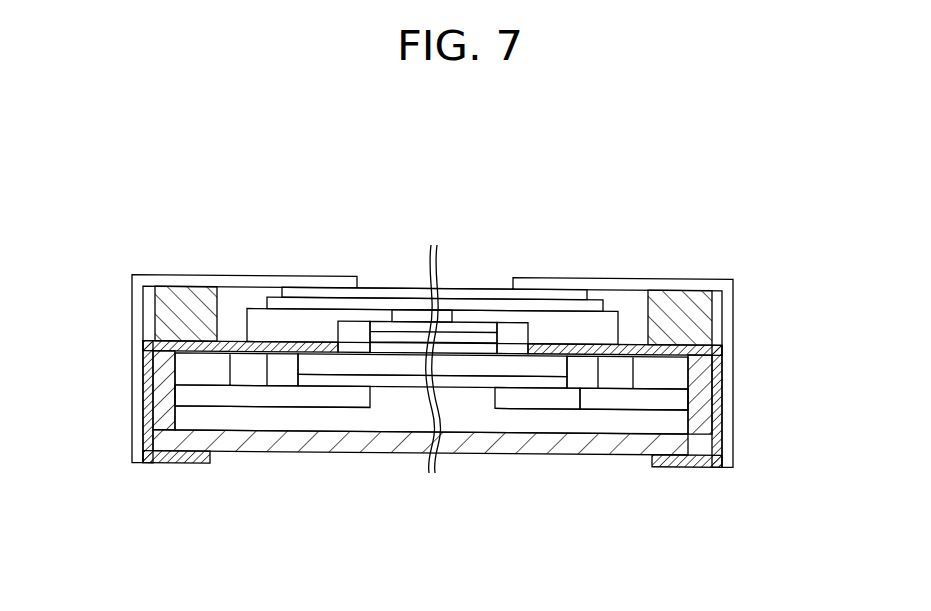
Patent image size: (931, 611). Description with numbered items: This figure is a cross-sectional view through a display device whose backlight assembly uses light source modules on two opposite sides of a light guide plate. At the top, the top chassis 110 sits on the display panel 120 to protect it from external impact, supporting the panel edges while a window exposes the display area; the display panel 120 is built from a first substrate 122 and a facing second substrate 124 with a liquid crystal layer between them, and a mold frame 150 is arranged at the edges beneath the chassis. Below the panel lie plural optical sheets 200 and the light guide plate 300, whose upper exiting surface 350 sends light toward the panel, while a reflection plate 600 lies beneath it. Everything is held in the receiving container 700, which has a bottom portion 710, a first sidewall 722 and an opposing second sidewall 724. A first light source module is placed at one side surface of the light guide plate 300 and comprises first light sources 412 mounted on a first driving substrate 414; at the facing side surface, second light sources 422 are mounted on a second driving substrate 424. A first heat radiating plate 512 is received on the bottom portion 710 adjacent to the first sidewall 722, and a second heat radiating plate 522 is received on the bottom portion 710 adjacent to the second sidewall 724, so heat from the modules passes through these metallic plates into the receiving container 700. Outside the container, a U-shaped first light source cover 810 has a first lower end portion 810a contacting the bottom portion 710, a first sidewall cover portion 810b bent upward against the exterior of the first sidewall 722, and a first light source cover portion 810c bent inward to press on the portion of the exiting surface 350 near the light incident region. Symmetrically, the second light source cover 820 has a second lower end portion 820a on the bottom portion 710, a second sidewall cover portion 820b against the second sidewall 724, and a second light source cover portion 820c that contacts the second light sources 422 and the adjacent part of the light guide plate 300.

The top chassis 110 is at (238, 277).
The display panel 120 is at (390, 216).
The first substrate 122 is at (327, 302).
The second substrate 124 is at (373, 292).
The mold frame 150 is at (193, 295).
The optical sheets 200 is at (498, 330).
The light guide plate 300 is at (447, 367).
The exiting surface 350 is at (283, 342).
The first light sources 412 is at (252, 375).
The first driving substrate 414 is at (298, 398).
The second light sources 422 is at (600, 430).
The second driving substrate 424 is at (658, 403).
The first heat radiating plate 512 is at (390, 407).
The second heat radiating plate 522 is at (477, 408).
The reflection plate 600 is at (340, 382).
The receiving container 700 is at (227, 464).
The bottom portion 710 is at (575, 378).
The first sidewall 722 is at (170, 405).
The second sidewall 724 is at (698, 417).
The first light source cover 810 is at (65, 310).
The first lower end portion 810a is at (175, 460).
The first sidewall cover portion 810b is at (143, 400).
The first light source cover portion 810c is at (180, 340).
The second light source cover 820 is at (808, 317).
The second lower end portion 820a is at (707, 470).
The second sidewall cover portion 820b is at (727, 412).
The second light source cover portion 820c is at (697, 350).